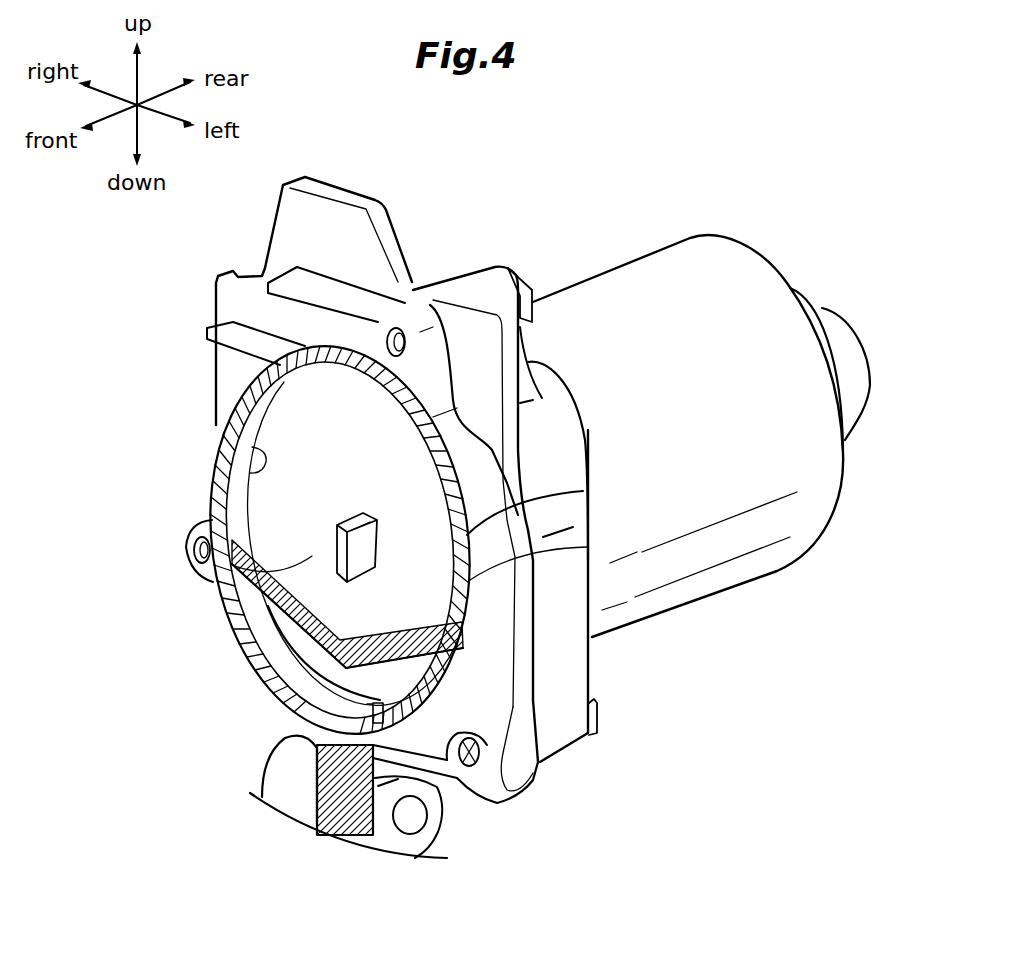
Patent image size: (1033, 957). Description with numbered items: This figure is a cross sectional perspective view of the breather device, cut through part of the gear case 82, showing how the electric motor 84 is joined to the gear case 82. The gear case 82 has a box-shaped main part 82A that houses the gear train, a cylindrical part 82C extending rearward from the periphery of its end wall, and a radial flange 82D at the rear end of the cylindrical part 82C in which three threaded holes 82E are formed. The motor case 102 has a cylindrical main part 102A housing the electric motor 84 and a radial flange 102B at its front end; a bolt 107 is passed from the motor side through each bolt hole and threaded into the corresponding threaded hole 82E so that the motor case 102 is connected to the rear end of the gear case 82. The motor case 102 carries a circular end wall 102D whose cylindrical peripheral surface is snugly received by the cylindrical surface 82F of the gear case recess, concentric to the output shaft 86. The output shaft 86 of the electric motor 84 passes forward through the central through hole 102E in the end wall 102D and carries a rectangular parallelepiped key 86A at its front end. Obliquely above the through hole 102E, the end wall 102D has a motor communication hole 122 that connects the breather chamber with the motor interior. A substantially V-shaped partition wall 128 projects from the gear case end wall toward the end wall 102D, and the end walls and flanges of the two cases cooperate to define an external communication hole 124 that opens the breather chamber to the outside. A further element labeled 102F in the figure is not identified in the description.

The gear case 82 is at (304, 758).
The main part 82A is at (345, 815).
The cylindrical part 82C is at (262, 623).
The radial flange 82D is at (503, 788).
The threaded holes 82E is at (397, 335).
The cylindrical surface 82F is at (253, 477).
The electric motor 84 is at (628, 304).
The output shaft 86 is at (386, 541).
The key 86A is at (363, 533).
The motor case 102 is at (740, 258).
The main part 102A is at (728, 552).
The radial flange 102B is at (572, 682).
The end wall 102D is at (268, 440).
The through hole 102E is at (382, 560).
The partition plate 102F is at (262, 598).
The bolt 107 is at (522, 280).
The motor communication hole 122 is at (583, 493).
The external communication hole 124 is at (365, 715).
The partition wall 128 is at (585, 548).